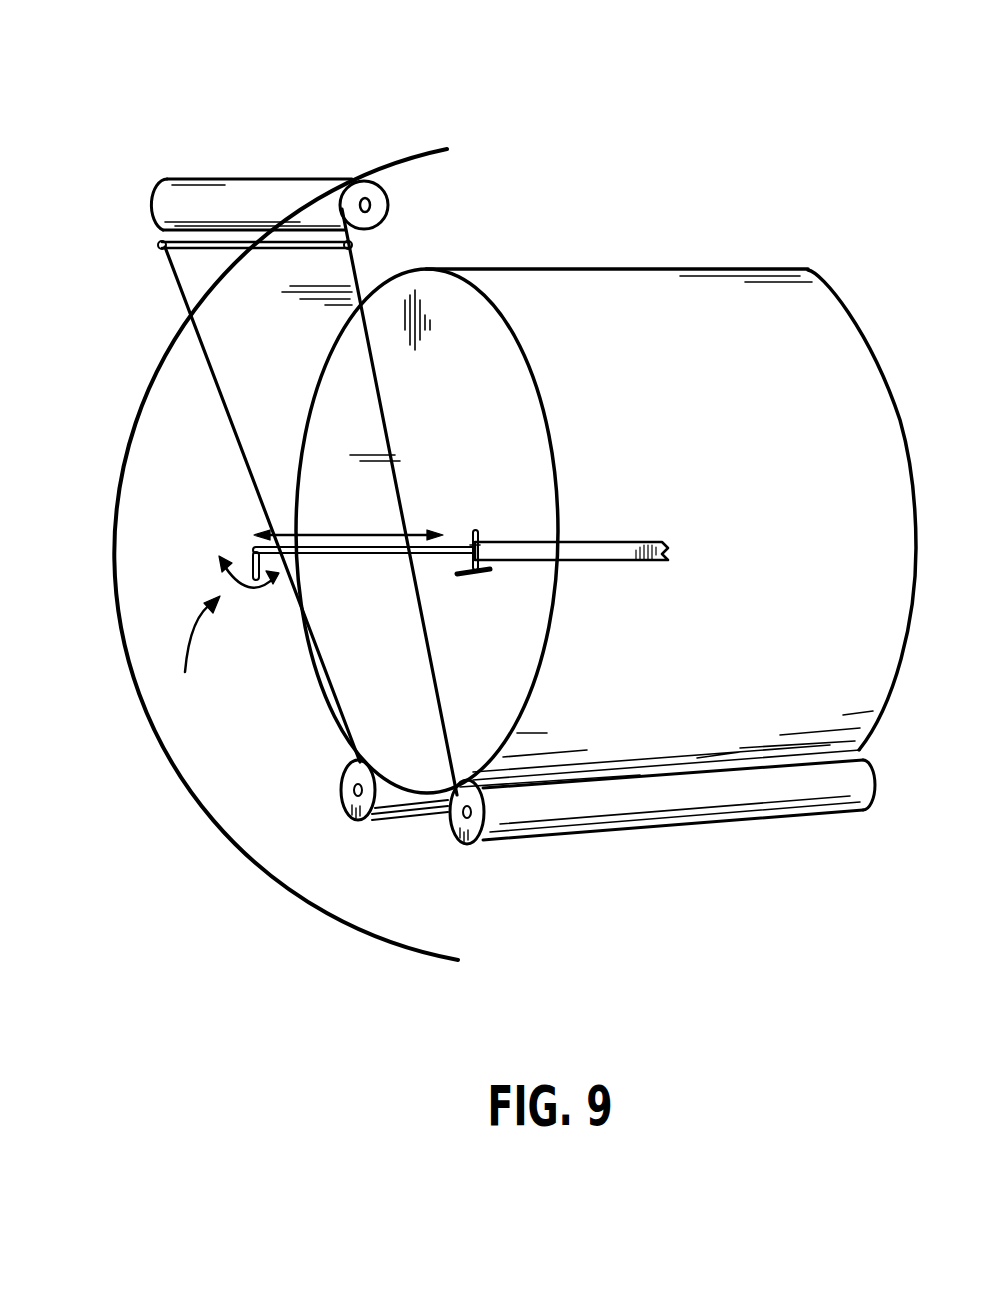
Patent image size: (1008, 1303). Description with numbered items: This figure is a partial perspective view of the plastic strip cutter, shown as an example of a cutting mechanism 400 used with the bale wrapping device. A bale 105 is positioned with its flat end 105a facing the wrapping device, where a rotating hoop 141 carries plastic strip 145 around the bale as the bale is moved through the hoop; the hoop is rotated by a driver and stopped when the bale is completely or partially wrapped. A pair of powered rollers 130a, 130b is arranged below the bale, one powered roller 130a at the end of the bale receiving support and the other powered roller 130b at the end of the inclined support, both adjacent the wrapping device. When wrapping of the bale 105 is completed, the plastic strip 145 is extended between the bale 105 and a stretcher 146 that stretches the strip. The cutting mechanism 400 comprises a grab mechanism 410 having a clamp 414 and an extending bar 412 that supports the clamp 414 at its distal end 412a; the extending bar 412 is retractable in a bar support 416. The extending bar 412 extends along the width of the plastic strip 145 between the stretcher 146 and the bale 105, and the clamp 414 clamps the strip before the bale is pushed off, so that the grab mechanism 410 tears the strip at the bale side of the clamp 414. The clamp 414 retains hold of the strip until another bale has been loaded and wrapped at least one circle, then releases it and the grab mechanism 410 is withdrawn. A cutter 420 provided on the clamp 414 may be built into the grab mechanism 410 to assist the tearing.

The bale 105 is at (647, 285).
The flat end 105a is at (428, 295).
The powered roller 130a is at (503, 835).
The powered roller 130b is at (385, 822).
The rotating hoop 141 is at (418, 153).
The plastic strip 145 is at (208, 188).
The stretcher 146 is at (200, 250).
The cutting mechanism 400 is at (200, 654).
The grab mechanism 410 is at (357, 556).
The extending bar 412 is at (472, 544).
The distal end 412a is at (252, 546).
The clamp 414 is at (252, 562).
The bar support 416 is at (634, 540).
The cutter 420 is at (483, 570).